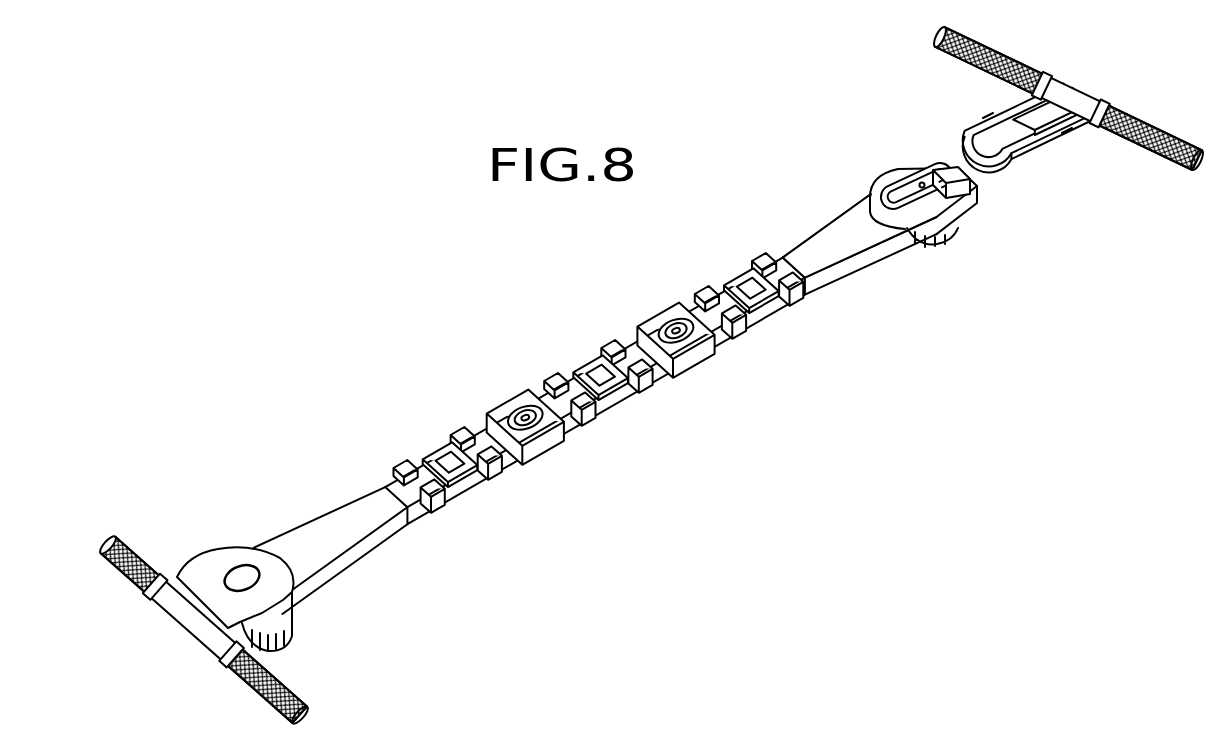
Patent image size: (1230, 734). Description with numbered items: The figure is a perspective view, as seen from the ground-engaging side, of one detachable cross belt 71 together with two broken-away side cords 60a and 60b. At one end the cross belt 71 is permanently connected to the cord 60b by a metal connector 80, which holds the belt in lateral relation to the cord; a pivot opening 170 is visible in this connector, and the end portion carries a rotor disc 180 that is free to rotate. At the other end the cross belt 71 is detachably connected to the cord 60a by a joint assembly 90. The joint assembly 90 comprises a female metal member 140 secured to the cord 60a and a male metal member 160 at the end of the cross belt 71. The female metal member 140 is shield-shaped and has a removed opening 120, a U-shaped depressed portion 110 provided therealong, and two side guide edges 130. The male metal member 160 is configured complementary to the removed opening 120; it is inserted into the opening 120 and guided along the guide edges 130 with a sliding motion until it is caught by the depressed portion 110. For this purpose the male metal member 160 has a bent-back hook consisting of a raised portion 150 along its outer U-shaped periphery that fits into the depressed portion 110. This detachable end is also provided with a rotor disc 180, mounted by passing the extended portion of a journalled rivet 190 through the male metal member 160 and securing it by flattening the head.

The side cord 60a is at (1069, 96).
The side cord 60b is at (130, 552).
The cross belt 71 is at (633, 347).
The metal connector 80 is at (200, 585).
The joint assembly 90 is at (1064, 170).
The depressed portion 110 is at (978, 142).
The removed opening 120 is at (1035, 120).
The side guide edge 130 is at (1068, 130).
The female metal member 140 is at (1058, 152).
The raised portion 150 is at (907, 202).
The male metal member 160 is at (943, 198).
The pivot hole 170 is at (243, 570).
The rotor disc 180 is at (920, 247).
The journalled rivet 190 is at (897, 183).